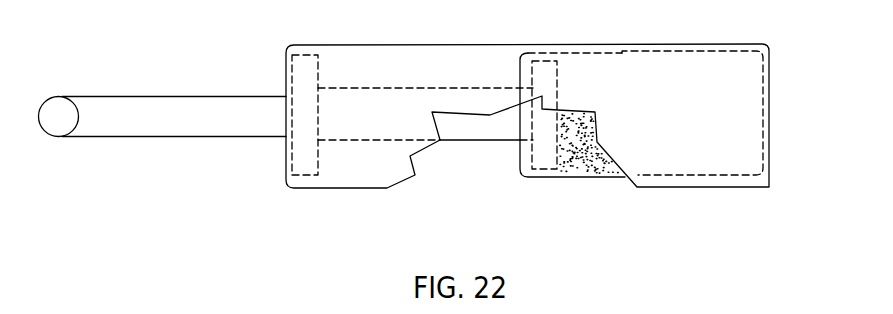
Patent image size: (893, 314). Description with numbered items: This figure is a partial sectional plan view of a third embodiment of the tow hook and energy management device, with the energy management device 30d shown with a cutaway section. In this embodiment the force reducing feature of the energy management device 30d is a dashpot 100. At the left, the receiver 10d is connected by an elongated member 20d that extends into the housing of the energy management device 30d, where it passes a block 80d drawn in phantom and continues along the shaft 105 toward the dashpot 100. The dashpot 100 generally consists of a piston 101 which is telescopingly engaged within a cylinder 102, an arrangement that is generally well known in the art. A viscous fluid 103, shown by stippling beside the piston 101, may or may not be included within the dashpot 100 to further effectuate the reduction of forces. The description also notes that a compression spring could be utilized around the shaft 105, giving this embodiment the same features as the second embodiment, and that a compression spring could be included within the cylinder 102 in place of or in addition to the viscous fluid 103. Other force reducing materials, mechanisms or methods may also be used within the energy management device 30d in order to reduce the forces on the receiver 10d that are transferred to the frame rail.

The receiver 10d is at (48, 137).
The plunger rod 20d is at (103, 137).
The energy management device 30d is at (711, 204).
The guide block 80d is at (320, 60).
The dashpot 100 is at (730, 65).
The piston 101 is at (562, 64).
The cylinder 102 is at (620, 52).
The viscous fluid 103 is at (578, 173).
The shaft 105 is at (387, 88).